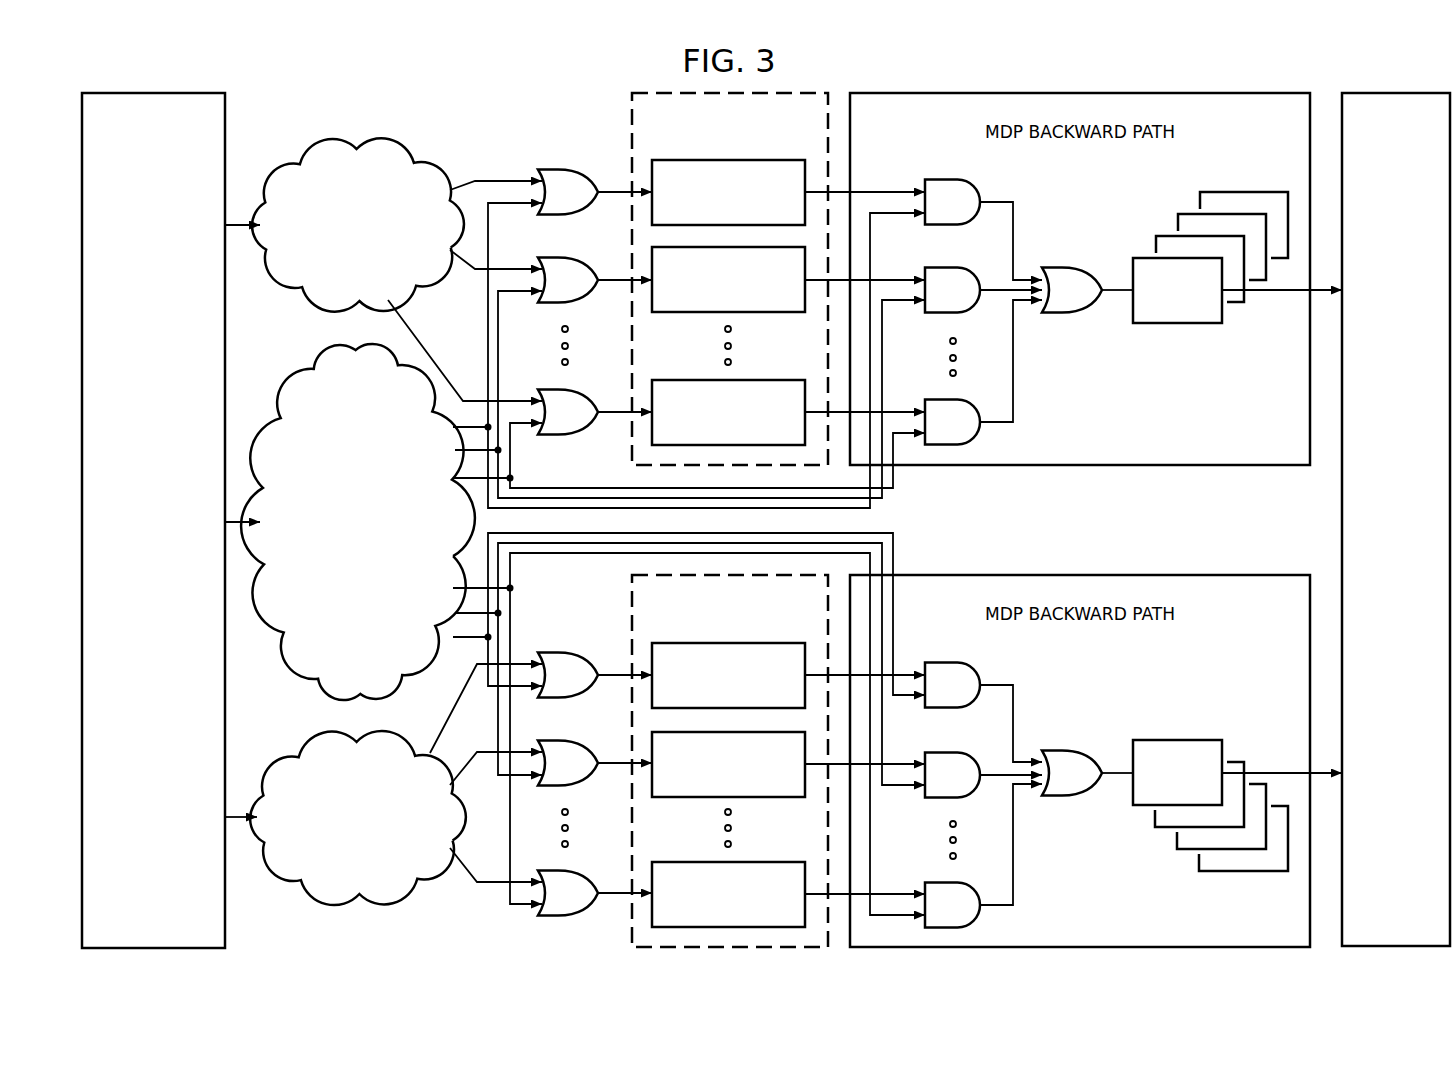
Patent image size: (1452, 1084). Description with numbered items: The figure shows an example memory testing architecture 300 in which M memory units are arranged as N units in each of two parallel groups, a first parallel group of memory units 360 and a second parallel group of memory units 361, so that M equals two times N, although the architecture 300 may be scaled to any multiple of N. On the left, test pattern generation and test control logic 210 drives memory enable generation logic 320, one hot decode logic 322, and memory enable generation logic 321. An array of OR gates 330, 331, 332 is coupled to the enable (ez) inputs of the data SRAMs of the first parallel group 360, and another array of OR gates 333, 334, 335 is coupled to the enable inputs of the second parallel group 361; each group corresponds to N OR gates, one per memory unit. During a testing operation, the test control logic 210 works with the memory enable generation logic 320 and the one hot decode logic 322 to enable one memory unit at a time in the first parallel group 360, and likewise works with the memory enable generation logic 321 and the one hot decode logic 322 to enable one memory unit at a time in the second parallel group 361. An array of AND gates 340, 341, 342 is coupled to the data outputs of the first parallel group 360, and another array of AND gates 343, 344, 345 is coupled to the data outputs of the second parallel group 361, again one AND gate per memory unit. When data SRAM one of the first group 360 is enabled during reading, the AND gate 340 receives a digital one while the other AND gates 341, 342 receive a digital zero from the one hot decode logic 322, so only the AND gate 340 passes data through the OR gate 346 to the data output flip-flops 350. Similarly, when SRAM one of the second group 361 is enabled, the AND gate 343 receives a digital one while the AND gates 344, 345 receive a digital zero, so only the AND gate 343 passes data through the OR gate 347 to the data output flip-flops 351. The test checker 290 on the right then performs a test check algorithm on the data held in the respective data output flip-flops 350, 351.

The memory testing architecture 300 is at (437, 100).
The test pattern generation and test control logic 210 is at (132, 622).
The test checker 290 is at (1375, 591).
The memory enable generation logic 320 is at (328, 147).
The memory enable generation logic 321 is at (326, 897).
The one hot decode logic 322 is at (337, 611).
The OR gate 330 is at (583, 169).
The OR gate 331 is at (583, 257).
The OR gate 332 is at (576, 389).
The OR gate 333 is at (578, 698).
The OR gate 334 is at (578, 786).
The OR gate 335 is at (578, 916).
The AND gate 340 is at (982, 192).
The AND gate 341 is at (972, 313).
The AND gate 342 is at (982, 437).
The AND gate 343 is at (982, 675).
The AND gate 344 is at (972, 797).
The AND gate 345 is at (982, 916).
The OR gate 346 is at (1068, 268).
The OR gate 347 is at (1068, 796).
The data output flip-flops 350 is at (1157, 304).
The data output flip-flops 351 is at (1157, 786).
The first parallel group of memory units 360 is at (707, 139).
The second parallel group of memory units 361 is at (707, 620).